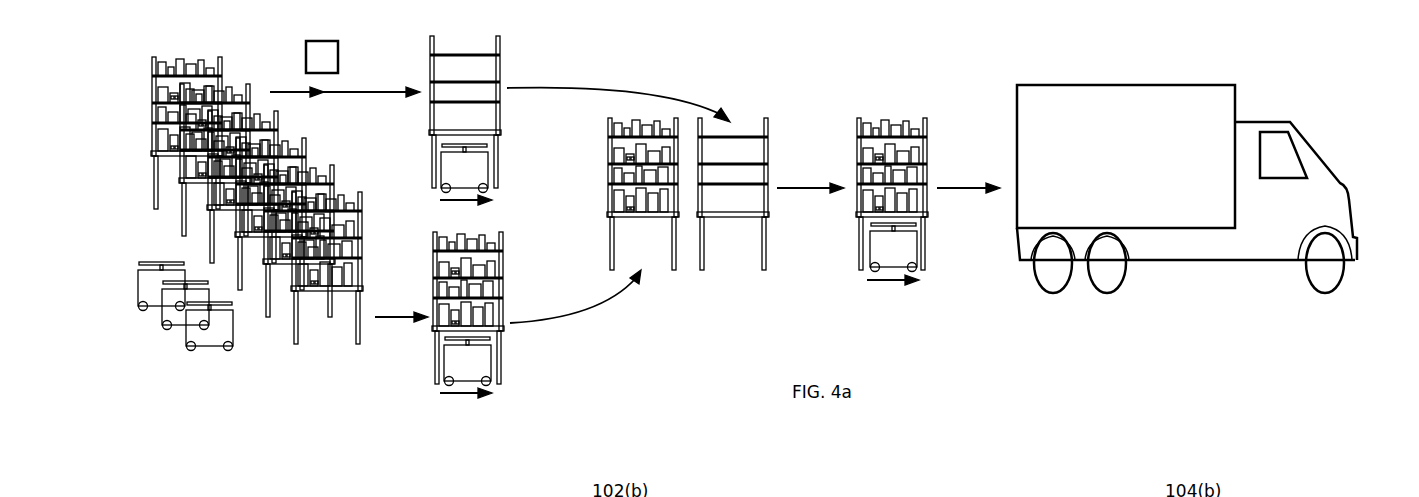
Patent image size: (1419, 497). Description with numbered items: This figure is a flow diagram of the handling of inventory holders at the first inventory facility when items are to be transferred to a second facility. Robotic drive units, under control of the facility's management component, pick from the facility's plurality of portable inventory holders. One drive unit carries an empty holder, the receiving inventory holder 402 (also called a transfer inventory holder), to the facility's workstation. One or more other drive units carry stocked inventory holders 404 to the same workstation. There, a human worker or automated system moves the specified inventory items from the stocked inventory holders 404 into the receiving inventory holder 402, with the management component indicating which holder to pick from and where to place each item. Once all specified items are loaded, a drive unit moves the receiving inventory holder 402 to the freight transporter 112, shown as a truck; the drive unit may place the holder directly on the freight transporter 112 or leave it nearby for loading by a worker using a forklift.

The freight transporter 112 is at (1223, 105).
The receiving inventory holder 402 is at (490, 66).
The stocked inventory holders 404 is at (490, 287).